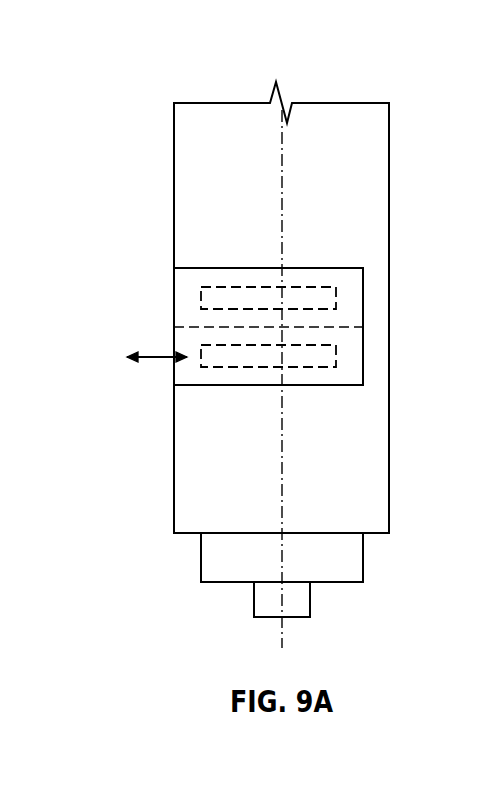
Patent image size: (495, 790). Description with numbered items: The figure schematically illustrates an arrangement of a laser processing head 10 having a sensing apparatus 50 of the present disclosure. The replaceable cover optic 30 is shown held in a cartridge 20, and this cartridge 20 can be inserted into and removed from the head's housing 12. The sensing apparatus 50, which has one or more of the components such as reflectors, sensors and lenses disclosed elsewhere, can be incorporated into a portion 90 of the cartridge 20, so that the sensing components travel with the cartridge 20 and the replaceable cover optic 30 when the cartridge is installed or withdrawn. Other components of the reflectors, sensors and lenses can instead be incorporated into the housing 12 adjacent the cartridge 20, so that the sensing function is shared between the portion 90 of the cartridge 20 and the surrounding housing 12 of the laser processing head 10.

The laser processing head 10 is at (185, 70).
The housing 12 is at (390, 172).
The portion of the cartridge 90 is at (363, 275).
The sensing apparatus 50 is at (336, 299).
The cartridge 20 is at (363, 357).
The replaceable cover optic 30 is at (336, 357).